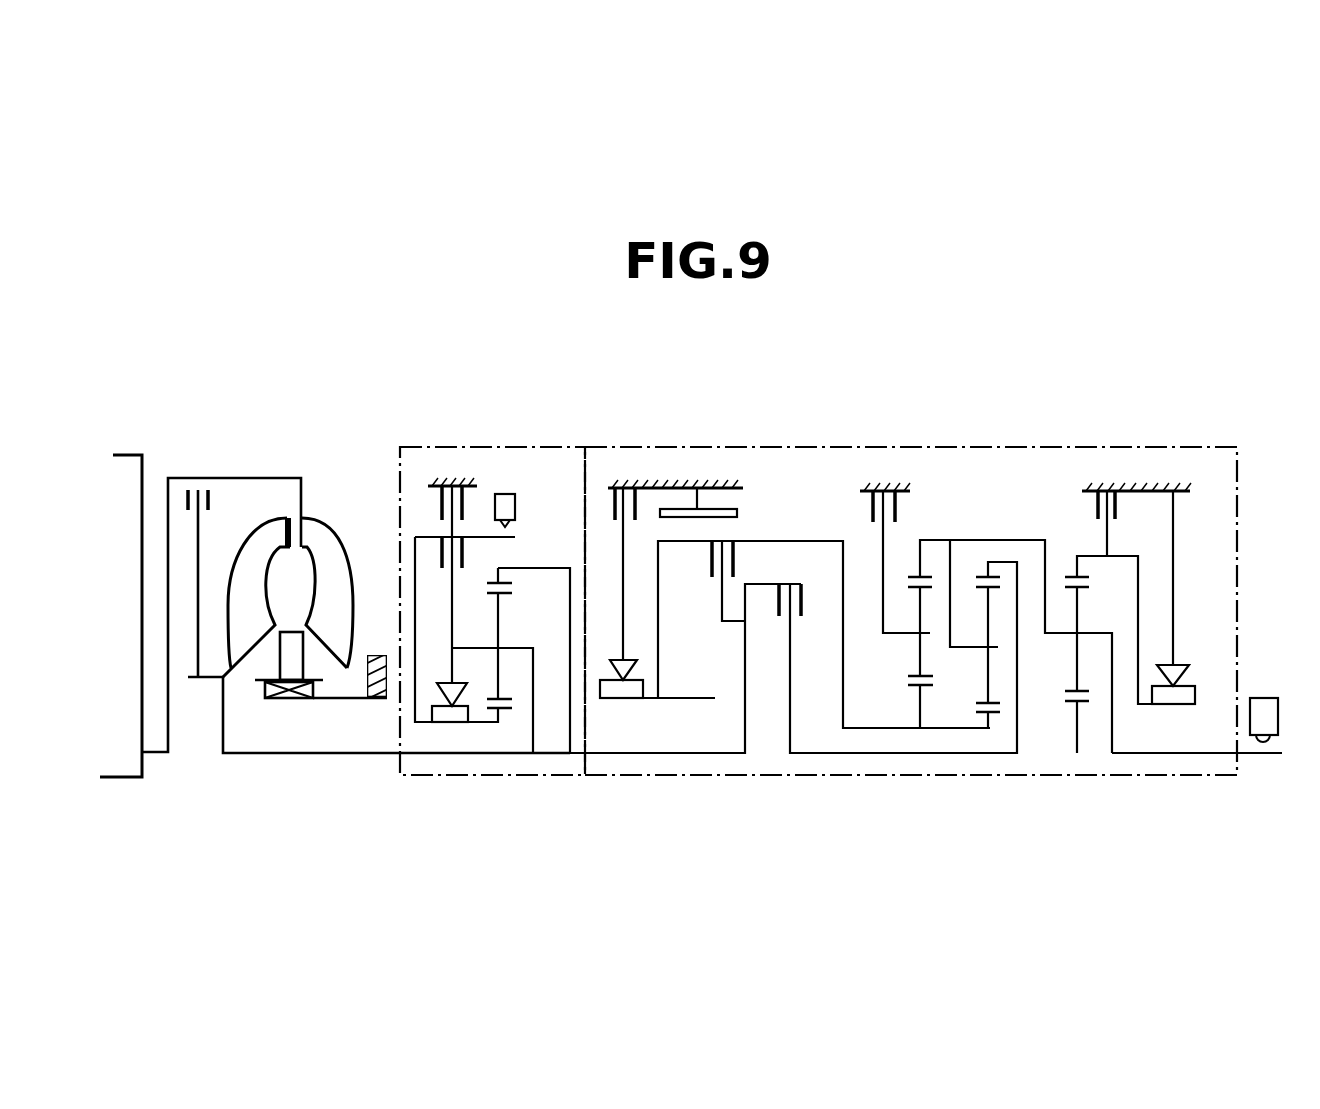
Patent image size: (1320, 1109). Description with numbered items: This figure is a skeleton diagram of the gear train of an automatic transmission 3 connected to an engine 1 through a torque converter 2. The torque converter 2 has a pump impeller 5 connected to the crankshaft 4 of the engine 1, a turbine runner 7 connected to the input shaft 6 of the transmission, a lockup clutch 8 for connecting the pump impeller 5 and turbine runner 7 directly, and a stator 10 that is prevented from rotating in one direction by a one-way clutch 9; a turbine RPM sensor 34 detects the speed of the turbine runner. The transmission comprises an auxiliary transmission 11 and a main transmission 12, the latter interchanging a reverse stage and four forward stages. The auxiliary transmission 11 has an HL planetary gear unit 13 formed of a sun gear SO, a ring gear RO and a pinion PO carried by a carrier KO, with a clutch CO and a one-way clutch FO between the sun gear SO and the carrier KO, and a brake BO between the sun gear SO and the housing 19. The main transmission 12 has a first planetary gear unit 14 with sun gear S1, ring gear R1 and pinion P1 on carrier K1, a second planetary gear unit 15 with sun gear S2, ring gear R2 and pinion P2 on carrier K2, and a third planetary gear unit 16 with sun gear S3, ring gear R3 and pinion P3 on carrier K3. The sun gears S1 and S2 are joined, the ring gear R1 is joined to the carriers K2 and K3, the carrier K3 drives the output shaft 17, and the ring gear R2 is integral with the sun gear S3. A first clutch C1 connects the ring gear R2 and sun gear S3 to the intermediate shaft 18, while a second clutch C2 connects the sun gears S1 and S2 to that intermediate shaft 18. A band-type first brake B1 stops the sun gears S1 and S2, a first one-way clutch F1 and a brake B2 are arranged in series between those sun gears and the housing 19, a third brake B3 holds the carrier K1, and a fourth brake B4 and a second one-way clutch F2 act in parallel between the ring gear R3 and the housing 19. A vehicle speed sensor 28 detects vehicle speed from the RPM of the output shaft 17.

The engine 1 is at (133, 466).
The torque converter 2 is at (356, 592).
The automatic transmission 3 is at (816, 581).
The crankshaft 4 is at (166, 754).
The pump impeller 5 is at (328, 545).
The input shaft 6 is at (312, 755).
The turbine runner 7 is at (270, 537).
The lockup clutch 8 is at (190, 489).
The one-way clutch 9 is at (292, 700).
The stator 10 is at (283, 647).
The auxiliary transmission 11 is at (467, 626).
The main transmission 12 is at (926, 626).
The HL planetary gear unit 13 is at (510, 690).
The first planetary gear unit 14 is at (964, 663).
The second planetary gear unit 15 is at (960, 674).
The third planetary gear unit 16 is at (1108, 663).
The output shaft 17 is at (1205, 755).
The intermediate shaft 18 is at (700, 754).
The housing 19 is at (378, 700).
The vehicle speed sensor 28 is at (1262, 707).
The turbine RPM sensor 34 is at (516, 507).
The brake B0 BO is at (440, 508).
The clutch C0 CO is at (440, 556).
The ring gear R0 RO is at (494, 584).
The pinion P0 PO is at (497, 597).
The sun gear S0 SO is at (488, 701).
The carrier K0 KO is at (510, 648).
The one-way clutch F0 FO is at (443, 723).
The first brake B1 is at (713, 500).
The brake B2 is at (612, 500).
The third brake B3 is at (868, 508).
The fourth brake B4 is at (1114, 504).
The first clutch C1 is at (799, 590).
The second clutch C2 is at (712, 559).
The first one-way clutch F1 is at (618, 699).
The second one-way clutch F2 is at (1174, 705).
The ring gear R1 is at (924, 571).
The ring gear R2 is at (984, 571).
The ring gear R3 is at (1072, 573).
The pinion P1 is at (917, 589).
The pinion P2 is at (982, 701).
The pinion P3 is at (1064, 691).
The carrier K1 is at (905, 634).
The carrier K2 is at (966, 647).
The carrier K3 is at (1083, 633).
The sun gear S1 is at (908, 688).
The sun gear S2 is at (975, 711).
The sun gear S3 is at (1066, 701).